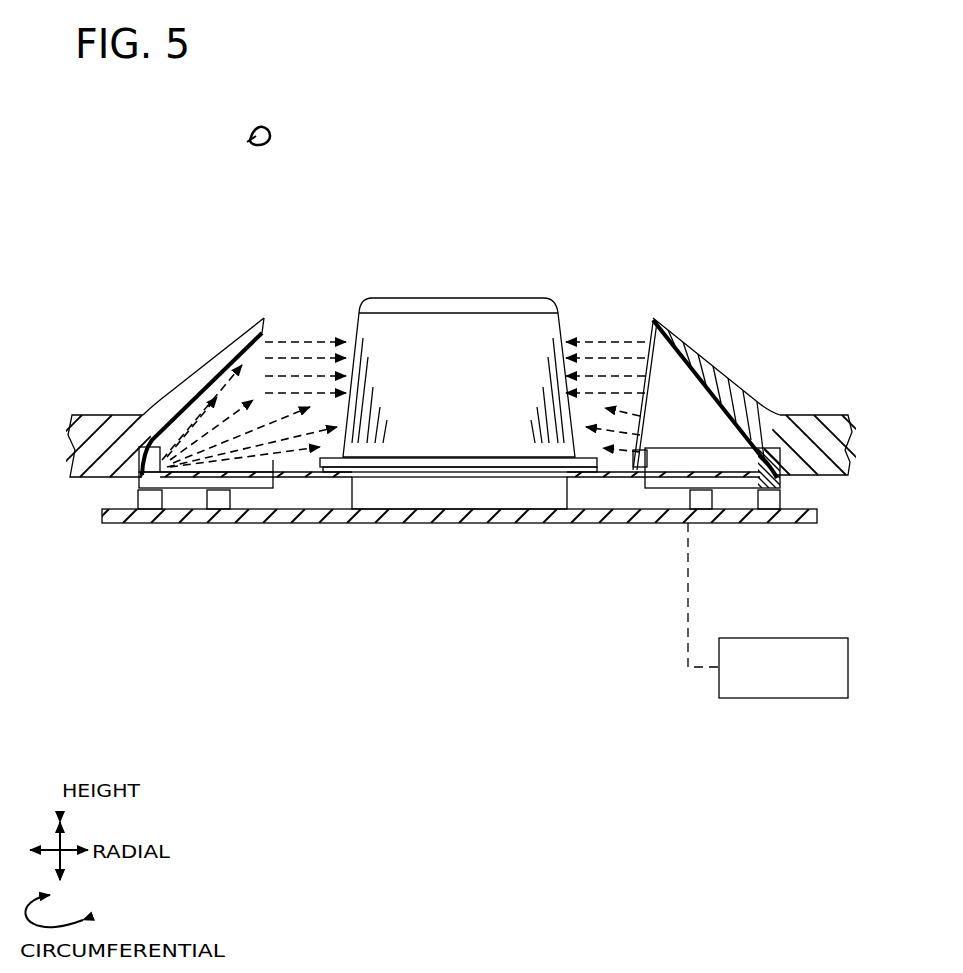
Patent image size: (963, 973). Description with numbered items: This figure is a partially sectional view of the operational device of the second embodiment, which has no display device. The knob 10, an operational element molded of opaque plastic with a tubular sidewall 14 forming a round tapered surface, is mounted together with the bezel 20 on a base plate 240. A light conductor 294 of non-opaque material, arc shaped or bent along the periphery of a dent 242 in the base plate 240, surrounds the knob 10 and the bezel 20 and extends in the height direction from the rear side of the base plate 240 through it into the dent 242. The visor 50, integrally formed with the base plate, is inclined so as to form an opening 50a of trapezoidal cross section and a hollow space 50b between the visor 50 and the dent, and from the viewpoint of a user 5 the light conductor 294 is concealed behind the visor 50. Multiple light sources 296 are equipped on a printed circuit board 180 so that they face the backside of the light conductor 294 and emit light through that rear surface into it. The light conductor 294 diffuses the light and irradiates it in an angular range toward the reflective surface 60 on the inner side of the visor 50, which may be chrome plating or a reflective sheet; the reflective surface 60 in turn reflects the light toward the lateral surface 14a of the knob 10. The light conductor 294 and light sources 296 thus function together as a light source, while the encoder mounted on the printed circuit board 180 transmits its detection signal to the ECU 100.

The user 5 is at (252, 136).
The knob 10 is at (459, 361).
The sidewall 14 is at (459, 363).
The lateral surface 14a is at (358, 322).
The bezel 20 is at (330, 466).
The visor 50 is at (185, 355).
The opening 50a is at (620, 324).
The hollow space 50b is at (666, 404).
The reflective surface 60 is at (664, 346).
The ECU 100 is at (782, 638).
The printed circuit board 180 is at (121, 524).
The base plate 240 is at (111, 411).
The dent 242 is at (723, 426).
The light conductor 294 is at (196, 490).
The light sources 296 is at (699, 511).